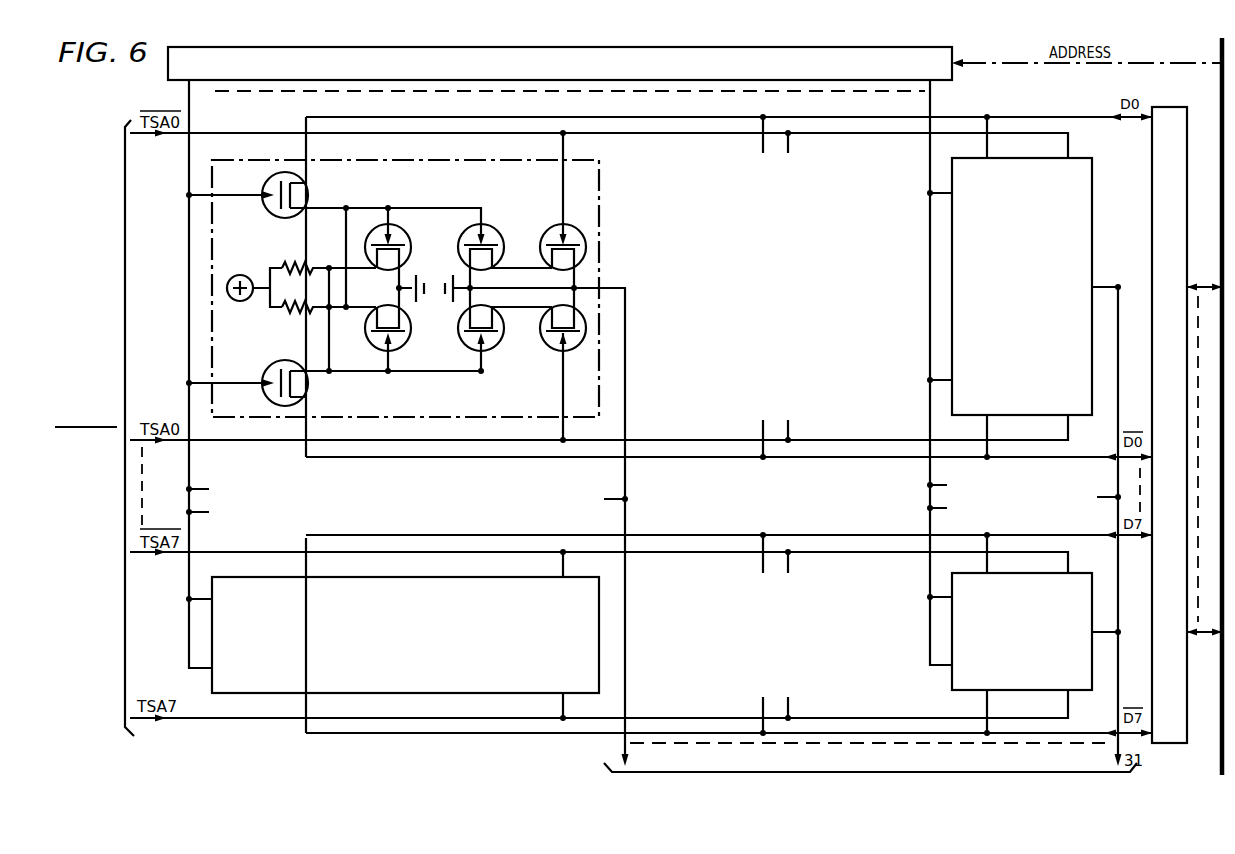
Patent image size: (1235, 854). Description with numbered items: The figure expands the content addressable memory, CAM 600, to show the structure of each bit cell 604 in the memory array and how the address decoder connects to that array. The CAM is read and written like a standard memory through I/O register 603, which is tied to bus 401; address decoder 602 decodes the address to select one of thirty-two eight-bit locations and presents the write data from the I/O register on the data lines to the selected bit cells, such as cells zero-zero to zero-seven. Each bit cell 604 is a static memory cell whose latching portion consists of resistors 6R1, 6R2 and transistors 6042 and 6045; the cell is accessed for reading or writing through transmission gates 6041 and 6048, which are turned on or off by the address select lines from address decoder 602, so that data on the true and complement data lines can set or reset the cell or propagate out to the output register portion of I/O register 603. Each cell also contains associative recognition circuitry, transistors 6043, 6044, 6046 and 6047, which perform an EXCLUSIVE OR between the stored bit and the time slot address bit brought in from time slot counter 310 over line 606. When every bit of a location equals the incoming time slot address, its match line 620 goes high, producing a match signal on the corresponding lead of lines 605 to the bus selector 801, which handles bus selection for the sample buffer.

The content addressable memory (CAM) 600 is at (794, 325).
The address decoder 602 is at (914, 48).
The I/O register 603 is at (1157, 107).
The bit cell 604 is at (599, 198).
The match signal lines 605 is at (870, 782).
The time slot address line 606 is at (86, 428).
The bit line 0 (match line) 620 is at (627, 512).
The bus 401 is at (1222, 750).
The time slot counter 310 is at (78, 427).
The bus select control 801 is at (855, 788).
The transmission gate 6041 is at (309, 203).
The transistor 6042 is at (401, 235).
The transistor 6043 is at (494, 235).
The transistor 6044 is at (557, 270).
The transistor 6045 is at (400, 345).
The transistor 6046 is at (494, 345).
The transistor 6047 is at (558, 355).
The transmission gate 6048 is at (305, 391).
The resistor 6R1 is at (329, 260).
The resistor 6R2 is at (329, 319).